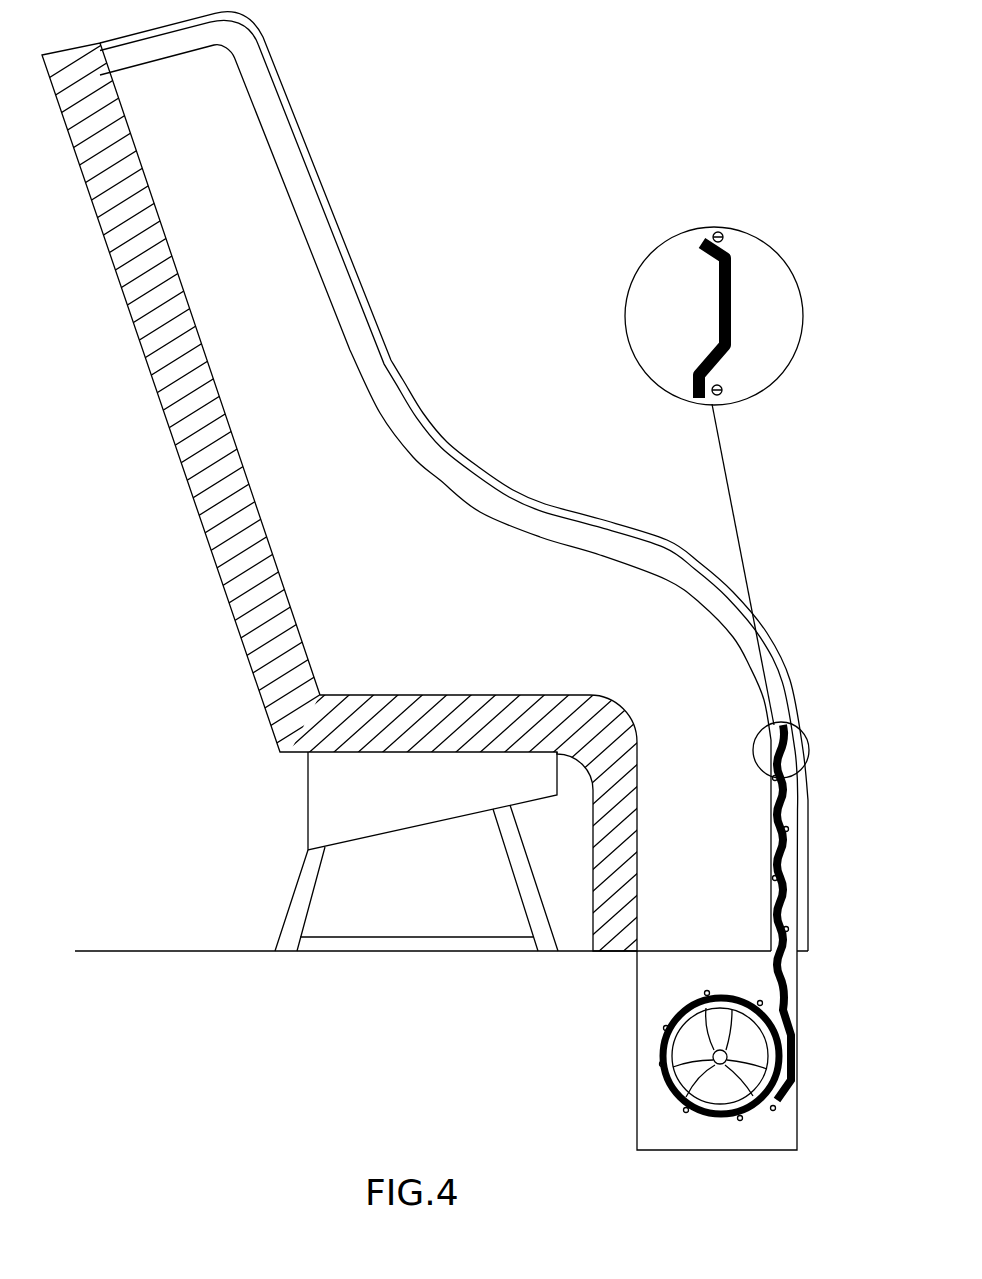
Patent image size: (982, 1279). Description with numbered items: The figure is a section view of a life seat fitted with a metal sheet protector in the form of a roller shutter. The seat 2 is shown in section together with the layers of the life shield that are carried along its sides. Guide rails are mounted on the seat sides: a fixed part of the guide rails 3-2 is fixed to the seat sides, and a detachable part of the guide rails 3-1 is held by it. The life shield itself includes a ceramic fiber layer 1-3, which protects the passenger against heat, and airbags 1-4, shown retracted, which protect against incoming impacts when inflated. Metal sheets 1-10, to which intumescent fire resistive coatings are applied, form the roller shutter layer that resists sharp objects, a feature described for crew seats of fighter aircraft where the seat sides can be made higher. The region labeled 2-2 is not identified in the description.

The seat 2 is at (228, 577).
The seat cushion 2-2 is at (272, 320).
The detachable part of guide rails 3-1 is at (507, 493).
The fixed part of guide rails 3-2 is at (440, 480).
The ceramic fiber layer 1-3 is at (703, 240).
The airbags (retracted) 1-4 is at (717, 302).
The metal sheets with intumescent fire resistive coatings 1-10 is at (735, 295).